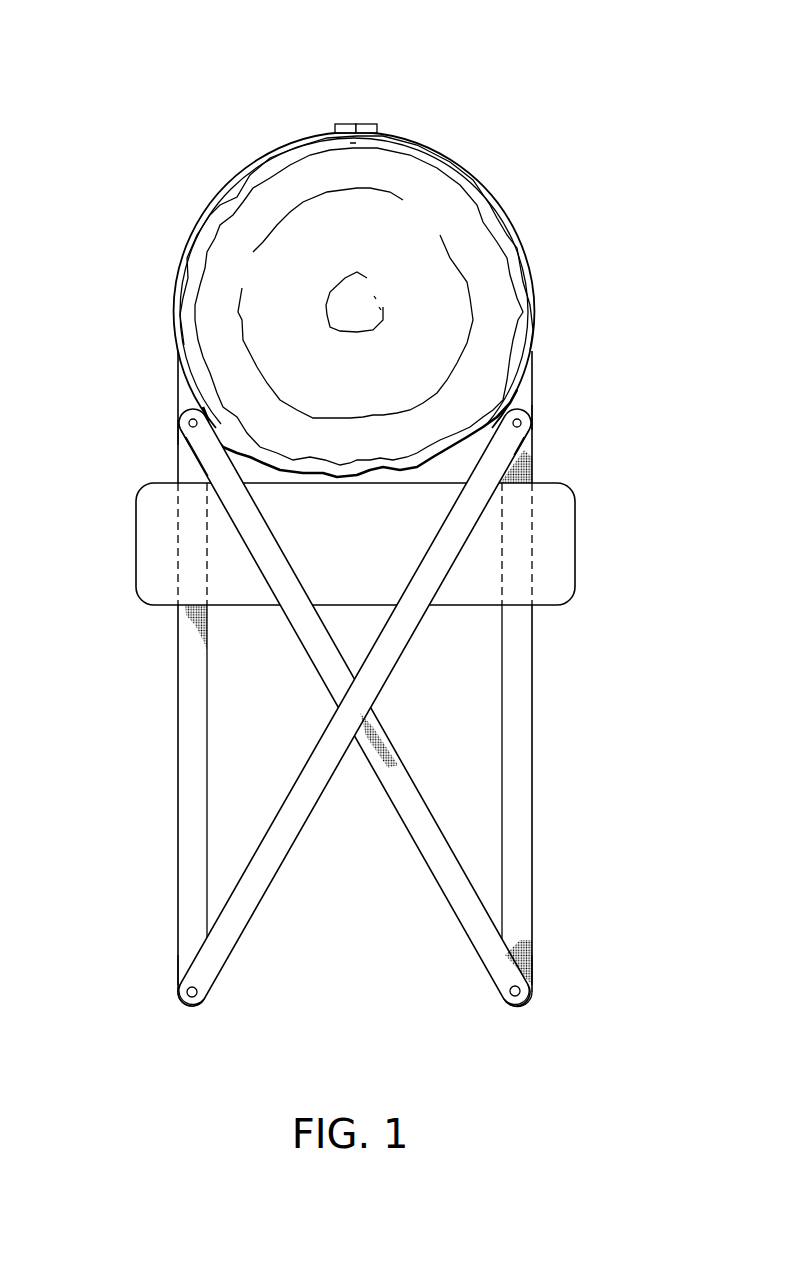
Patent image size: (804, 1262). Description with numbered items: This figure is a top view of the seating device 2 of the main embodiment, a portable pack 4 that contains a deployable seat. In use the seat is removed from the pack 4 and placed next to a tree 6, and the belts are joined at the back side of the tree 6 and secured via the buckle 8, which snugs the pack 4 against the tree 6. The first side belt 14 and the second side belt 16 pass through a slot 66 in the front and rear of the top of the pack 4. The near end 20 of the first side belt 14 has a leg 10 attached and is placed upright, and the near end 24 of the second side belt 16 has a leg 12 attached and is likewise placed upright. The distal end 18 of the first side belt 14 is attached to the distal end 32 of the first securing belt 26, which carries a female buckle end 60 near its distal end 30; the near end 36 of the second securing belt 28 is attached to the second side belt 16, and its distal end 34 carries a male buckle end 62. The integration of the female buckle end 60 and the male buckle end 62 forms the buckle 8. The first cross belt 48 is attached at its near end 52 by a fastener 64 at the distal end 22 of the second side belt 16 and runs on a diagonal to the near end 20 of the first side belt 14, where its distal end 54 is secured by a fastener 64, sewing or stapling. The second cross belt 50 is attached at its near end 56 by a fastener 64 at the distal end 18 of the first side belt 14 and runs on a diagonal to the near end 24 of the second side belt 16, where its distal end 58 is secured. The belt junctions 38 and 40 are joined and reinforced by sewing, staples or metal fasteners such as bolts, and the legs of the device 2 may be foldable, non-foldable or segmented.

The seating device 2 is at (360, 551).
The pack 4 is at (575, 565).
The tree 6 is at (477, 192).
The buckle 8 is at (357, 106).
The leg 10 is at (158, 992).
The leg 12 is at (553, 1013).
The first side belt 14 is at (178, 795).
The second side belt 16 is at (518, 776).
The distal end of the first side belt 18 is at (183, 453).
The near end of the first side belt 20 is at (200, 1010).
The distal end of the second side belt 22 is at (524, 450).
The near end of the second side belt 24 is at (513, 1010).
The first securing belt 26 is at (268, 163).
The second securing belt 28 is at (530, 268).
The distal end of the first securing belt 30 is at (332, 128).
The distal end of the first securing belt 32 is at (186, 387).
The distal end of the second securing belt 34 is at (380, 128).
The near end of the second securing belt 36 is at (528, 388).
The belt junction 38 is at (184, 1000).
The belt junction 40 is at (183, 434).
The first cross belt 48 is at (233, 958).
The second cross belt 50 is at (455, 912).
The near end of the first cross belt 52 is at (525, 455).
The distal end of the first cross belt 54 is at (183, 975).
The near end of the second cross belt 56 is at (213, 465).
The distal end of the second cross belt 58 is at (535, 978).
The female buckle end 60 is at (340, 123).
The male buckle end 62 is at (370, 123).
The fastener 64 is at (188, 420).
The slot 66 is at (527, 605).